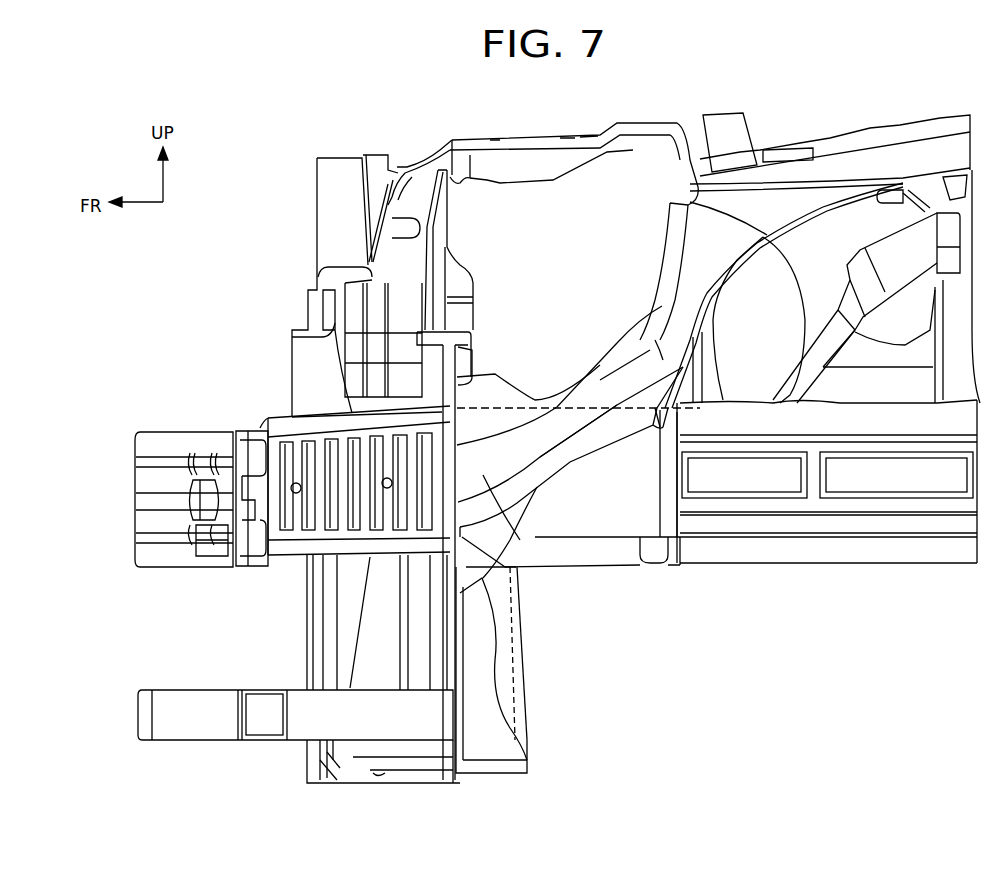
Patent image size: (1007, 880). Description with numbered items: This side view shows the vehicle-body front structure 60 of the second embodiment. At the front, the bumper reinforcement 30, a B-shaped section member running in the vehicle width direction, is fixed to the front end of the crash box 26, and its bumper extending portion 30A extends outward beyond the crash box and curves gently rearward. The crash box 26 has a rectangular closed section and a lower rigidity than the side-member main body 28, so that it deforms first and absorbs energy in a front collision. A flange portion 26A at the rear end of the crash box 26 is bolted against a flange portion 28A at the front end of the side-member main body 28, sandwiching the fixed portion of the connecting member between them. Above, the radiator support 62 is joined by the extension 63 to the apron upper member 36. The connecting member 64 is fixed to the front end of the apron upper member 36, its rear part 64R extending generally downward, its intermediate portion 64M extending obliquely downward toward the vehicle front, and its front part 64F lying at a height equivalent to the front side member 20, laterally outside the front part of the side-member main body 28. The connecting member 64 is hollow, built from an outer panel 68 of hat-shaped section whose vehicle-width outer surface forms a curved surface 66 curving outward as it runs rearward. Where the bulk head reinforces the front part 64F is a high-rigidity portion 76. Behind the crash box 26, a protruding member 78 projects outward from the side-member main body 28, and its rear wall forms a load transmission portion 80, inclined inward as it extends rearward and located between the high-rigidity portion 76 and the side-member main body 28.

The front side member 20 is at (777, 566).
The crash box 26 is at (283, 424).
The flange portion 26A is at (453, 583).
The side-member main body 28 is at (858, 565).
The flange portion 28A is at (490, 638).
The bumper reinforcement 30 is at (165, 430).
The bumper extending portion 30A is at (240, 567).
The apron upper member 36 is at (862, 160).
The vehicle-body front structure 60 is at (708, 650).
The radiator support 62 is at (346, 156).
The extension 63 is at (518, 142).
The connecting member 64 is at (617, 343).
The front part 64F is at (483, 400).
The intermediate portion 64M is at (583, 377).
The rear part 64R is at (688, 268).
The curved surface 66 is at (560, 428).
The outer panel 68 is at (660, 350).
The high-rigidity portion 76 is at (520, 540).
The protruding member 78 is at (578, 565).
The load transmission portion 80 is at (623, 517).